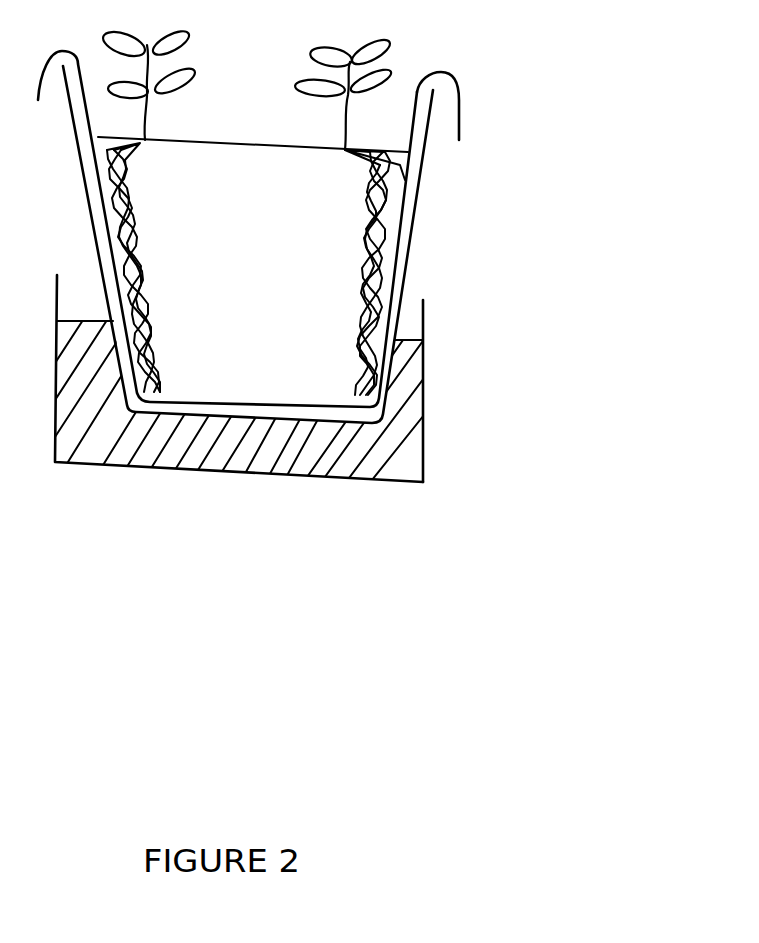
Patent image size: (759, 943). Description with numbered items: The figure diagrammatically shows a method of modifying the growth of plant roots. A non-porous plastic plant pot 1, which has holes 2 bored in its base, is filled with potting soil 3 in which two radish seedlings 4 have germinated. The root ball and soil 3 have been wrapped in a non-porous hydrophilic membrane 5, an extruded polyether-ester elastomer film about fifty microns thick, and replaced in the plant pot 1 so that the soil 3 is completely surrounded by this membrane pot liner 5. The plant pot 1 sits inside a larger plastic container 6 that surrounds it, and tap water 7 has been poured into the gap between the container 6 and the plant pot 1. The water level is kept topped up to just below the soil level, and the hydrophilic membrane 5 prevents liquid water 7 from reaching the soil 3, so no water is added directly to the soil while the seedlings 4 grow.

The plant pot 1 is at (428, 163).
The holes 2 is at (288, 475).
The potting soil 3 is at (377, 248).
The radish seedlings 4 is at (390, 47).
The hydrophilic membrane 5 is at (462, 95).
The container 6 is at (427, 313).
The tap water 7 is at (425, 398).